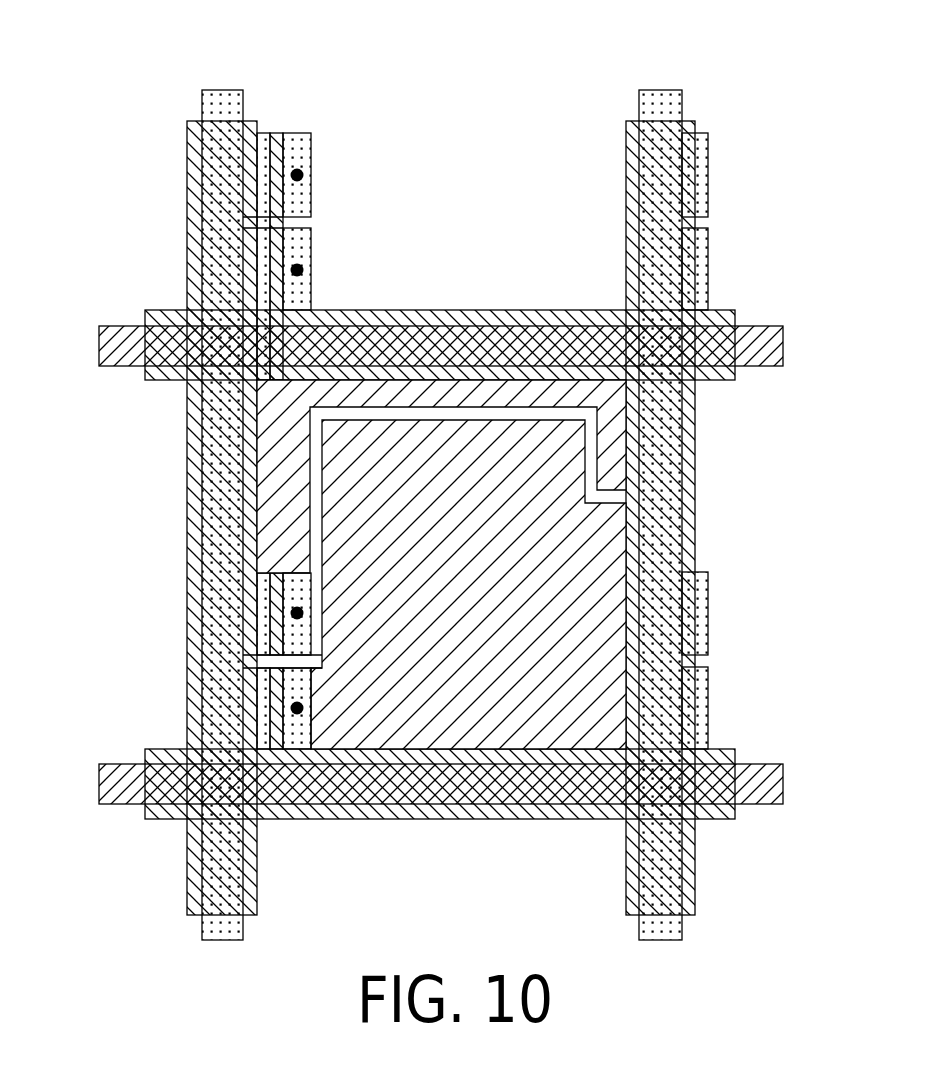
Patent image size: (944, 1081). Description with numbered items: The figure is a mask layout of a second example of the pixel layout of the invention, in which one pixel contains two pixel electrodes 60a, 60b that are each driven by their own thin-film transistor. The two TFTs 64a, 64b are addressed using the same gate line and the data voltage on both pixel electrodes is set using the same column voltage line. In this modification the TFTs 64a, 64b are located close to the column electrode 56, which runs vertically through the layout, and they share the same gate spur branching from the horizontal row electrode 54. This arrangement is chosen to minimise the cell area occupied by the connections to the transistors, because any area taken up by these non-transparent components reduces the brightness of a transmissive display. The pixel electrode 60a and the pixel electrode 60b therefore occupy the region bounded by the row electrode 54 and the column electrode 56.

The row electrode 54 is at (100, 345).
The column electrode 56 is at (222, 90).
The pixel electrode 60a is at (268, 508).
The pixel electrode 60b is at (577, 557).
The TFT 64a is at (230, 613).
The TFT 64b is at (230, 710).